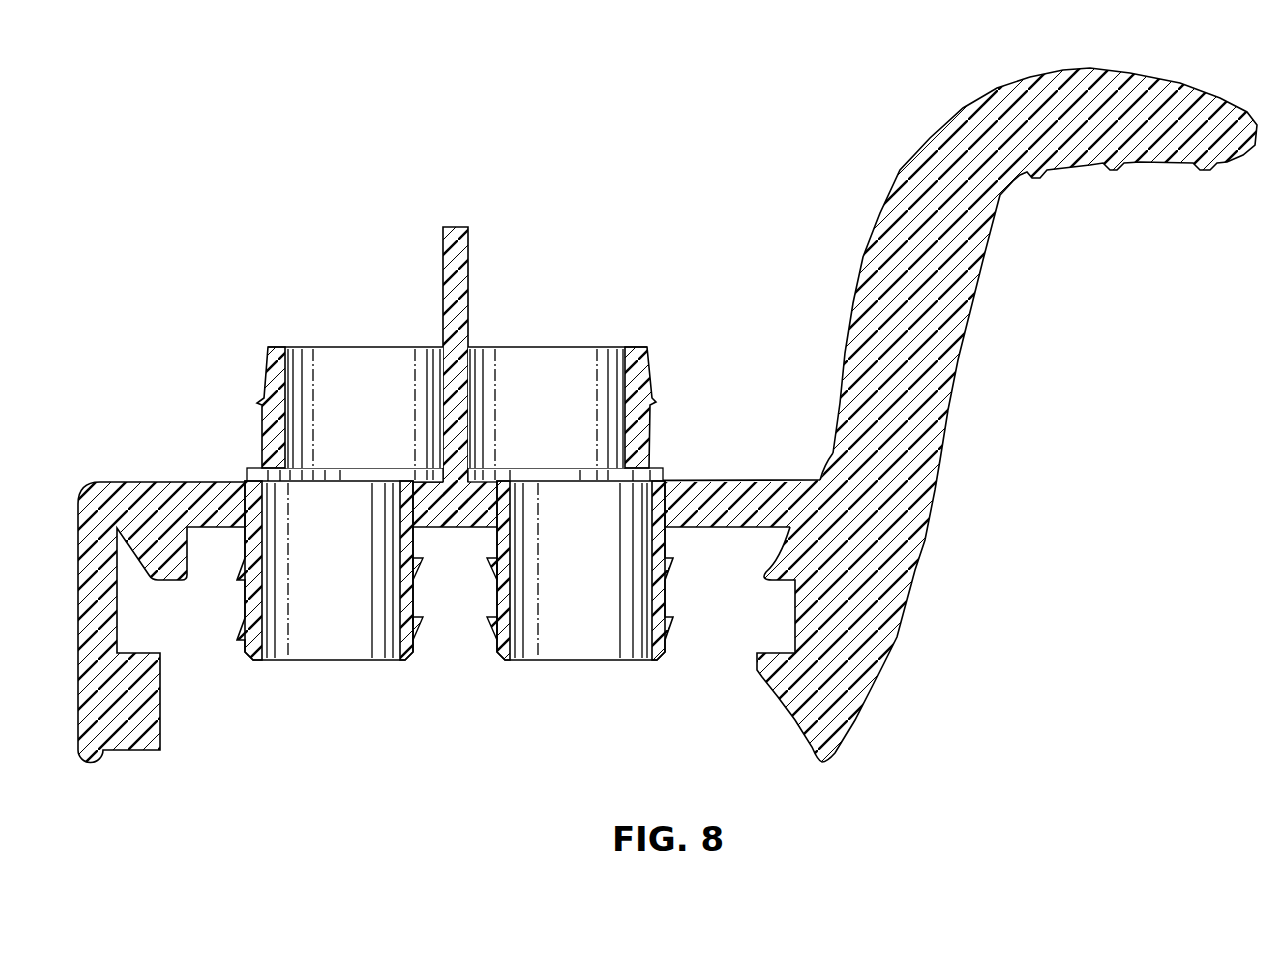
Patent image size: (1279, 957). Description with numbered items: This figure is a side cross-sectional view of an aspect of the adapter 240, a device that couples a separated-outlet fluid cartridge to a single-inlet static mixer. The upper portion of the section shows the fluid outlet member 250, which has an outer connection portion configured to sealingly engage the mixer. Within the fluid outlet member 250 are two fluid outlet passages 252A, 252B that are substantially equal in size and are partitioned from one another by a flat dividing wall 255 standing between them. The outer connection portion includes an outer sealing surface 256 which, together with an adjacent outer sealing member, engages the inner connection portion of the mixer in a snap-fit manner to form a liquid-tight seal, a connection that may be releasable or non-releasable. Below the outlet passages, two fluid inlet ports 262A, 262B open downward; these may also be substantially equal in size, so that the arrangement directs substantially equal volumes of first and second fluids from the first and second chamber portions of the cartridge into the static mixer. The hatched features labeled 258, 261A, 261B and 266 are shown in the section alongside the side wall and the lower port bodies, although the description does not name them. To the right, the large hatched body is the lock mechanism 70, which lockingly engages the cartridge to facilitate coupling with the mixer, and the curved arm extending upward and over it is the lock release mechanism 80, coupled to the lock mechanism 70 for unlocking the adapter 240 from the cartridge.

The adapter 240 is at (449, 444).
The fluid outlet member 250 is at (725, 392).
The fluid outlet passage 252A is at (390, 433).
The fluid outlet passage 252B is at (525, 433).
The flat dividing wall 255 is at (455, 228).
The outer sealing surface 256 is at (262, 348).
The side wall 258 is at (260, 393).
The first lower receptacle 261A is at (325, 617).
The second lower receptacle 261B is at (585, 618).
The fluid inlet port 262A is at (305, 587).
The fluid inlet port 262B is at (550, 585).
The retention barbs 266 is at (493, 560).
The lock mechanism 70 is at (992, 548).
The lock release mechanism 80 is at (868, 170).